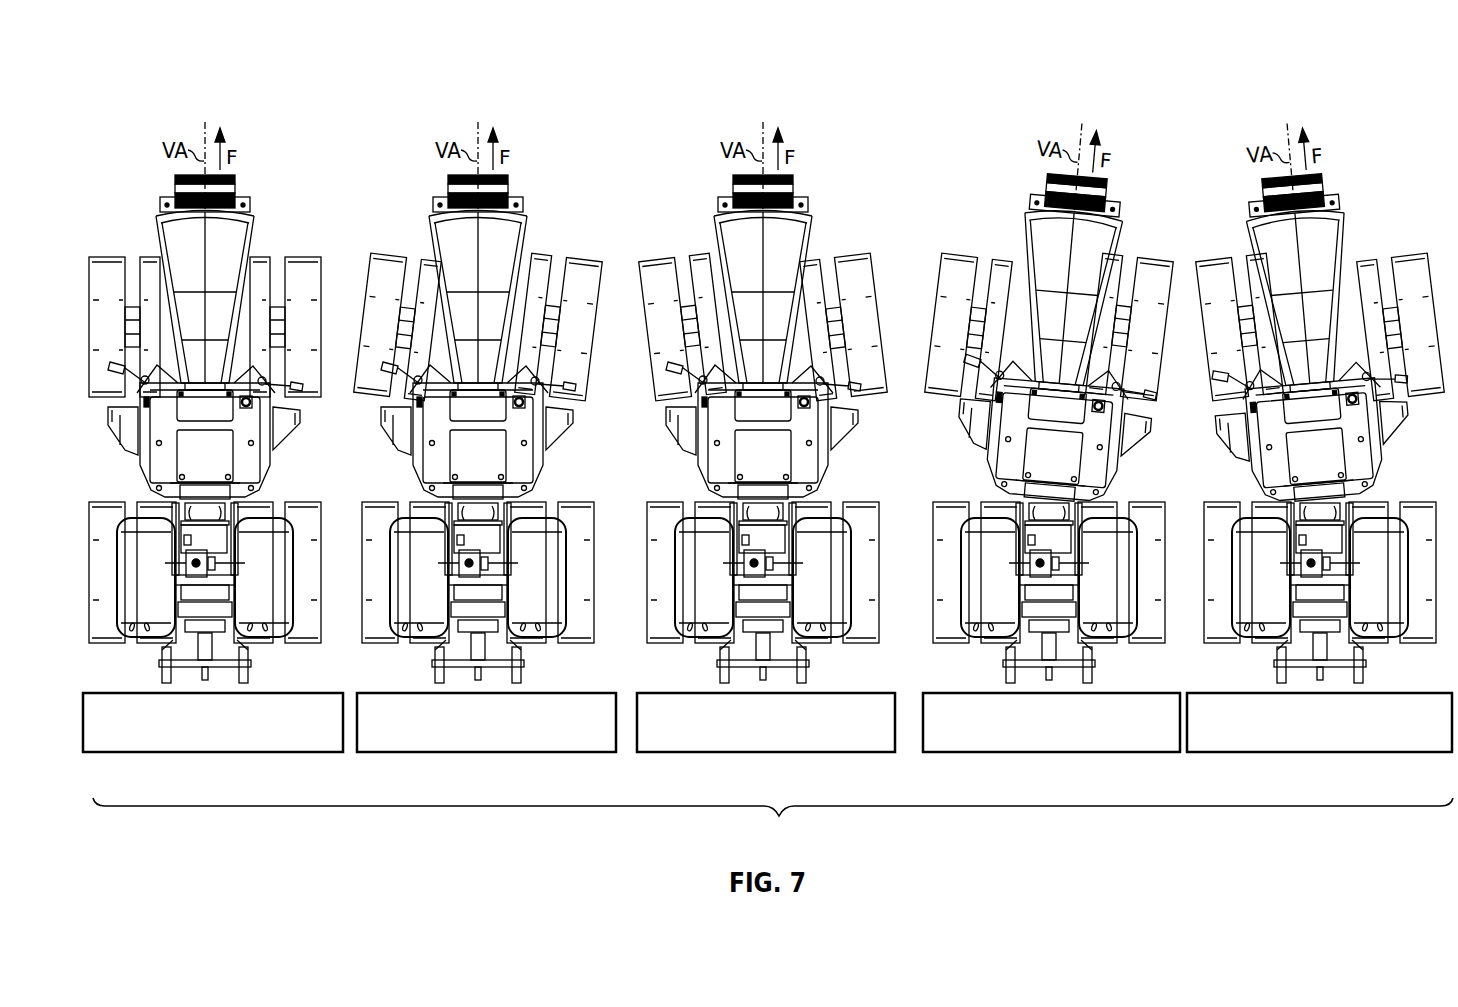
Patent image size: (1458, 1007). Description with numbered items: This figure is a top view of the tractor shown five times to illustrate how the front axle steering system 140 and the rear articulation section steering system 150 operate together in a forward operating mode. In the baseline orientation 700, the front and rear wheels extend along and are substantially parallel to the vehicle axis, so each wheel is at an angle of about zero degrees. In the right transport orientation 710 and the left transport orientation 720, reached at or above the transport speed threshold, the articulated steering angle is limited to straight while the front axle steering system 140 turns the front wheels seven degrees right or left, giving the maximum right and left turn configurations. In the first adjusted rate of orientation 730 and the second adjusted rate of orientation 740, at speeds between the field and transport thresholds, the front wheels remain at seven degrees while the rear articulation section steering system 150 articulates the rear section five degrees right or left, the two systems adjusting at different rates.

The baseline orientation 700 is at (285, 114).
The right transport orientation 710 is at (538, 114).
The left transport orientation 720 is at (831, 114).
The first adjusted rate of orientation 730 is at (1120, 114).
The second adjusted rate of orientation 740 is at (1339, 114).
The front axle steering system 140 is at (493, 410).
The rear articulation section steering system 150 is at (493, 457).